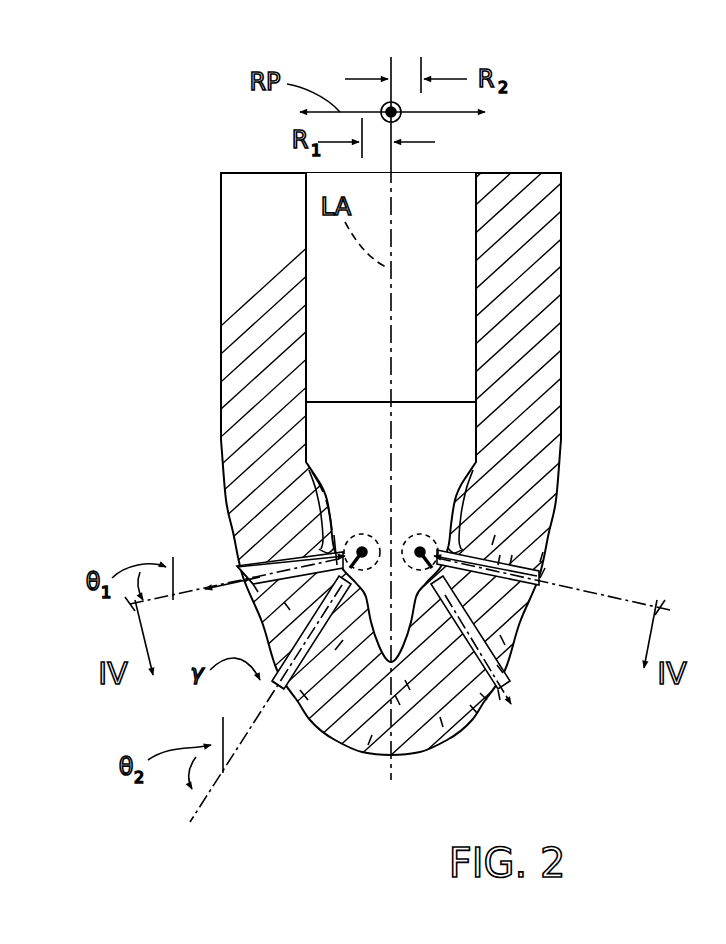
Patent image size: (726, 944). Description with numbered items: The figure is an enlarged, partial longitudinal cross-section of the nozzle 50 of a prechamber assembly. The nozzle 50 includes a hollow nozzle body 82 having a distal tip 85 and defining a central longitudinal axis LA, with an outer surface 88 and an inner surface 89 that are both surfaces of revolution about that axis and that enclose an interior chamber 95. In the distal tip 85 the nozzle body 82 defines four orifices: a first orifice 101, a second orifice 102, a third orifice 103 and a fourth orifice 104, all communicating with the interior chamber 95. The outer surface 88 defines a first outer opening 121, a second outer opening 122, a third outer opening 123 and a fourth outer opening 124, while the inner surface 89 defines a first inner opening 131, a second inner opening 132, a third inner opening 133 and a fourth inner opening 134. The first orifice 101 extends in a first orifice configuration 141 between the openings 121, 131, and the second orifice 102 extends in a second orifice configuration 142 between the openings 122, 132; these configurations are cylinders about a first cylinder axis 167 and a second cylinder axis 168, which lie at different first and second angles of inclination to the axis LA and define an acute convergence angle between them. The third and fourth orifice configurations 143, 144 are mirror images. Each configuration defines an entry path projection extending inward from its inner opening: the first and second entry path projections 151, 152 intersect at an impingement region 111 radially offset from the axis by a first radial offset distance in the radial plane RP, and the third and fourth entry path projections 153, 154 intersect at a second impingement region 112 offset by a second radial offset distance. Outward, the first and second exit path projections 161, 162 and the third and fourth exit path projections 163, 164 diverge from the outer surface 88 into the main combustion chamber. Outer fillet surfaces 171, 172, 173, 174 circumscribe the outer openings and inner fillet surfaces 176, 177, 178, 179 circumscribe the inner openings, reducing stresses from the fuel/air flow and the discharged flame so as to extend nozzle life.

The nozzle 50 is at (186, 141).
The nozzle body 82 is at (221, 215).
The outer surface 88 is at (218, 295).
The inner surface 89 is at (468, 407).
The interior chamber 95 is at (335, 436).
The distal tip 85 is at (290, 610).
The first orifice 101 is at (317, 553).
The second orifice 102 is at (312, 700).
The third orifice 103 is at (522, 550).
The fourth orifice 104 is at (497, 707).
The impingement region 111 is at (358, 545).
The second impingement region 112 is at (427, 548).
The first outer opening 121 is at (330, 570).
The second outer opening 122 is at (266, 707).
The third outer opening 123 is at (545, 568).
The fourth outer opening 124 is at (505, 676).
The first inner opening 131 is at (330, 547).
The second inner opening 132 is at (410, 690).
The third inner opening 133 is at (512, 555).
The fourth inner opening 134 is at (477, 713).
The first orifice configuration 141 is at (240, 567).
The second orifice configuration 142 is at (335, 650).
The third orifice configuration 143 is at (562, 600).
The fourth orifice configuration 144 is at (500, 635).
The first entry path projection 151 is at (343, 513).
The second entry path projection 152 is at (400, 705).
The third entry path projection 153 is at (495, 535).
The fourth entry path projection 154 is at (443, 727).
The first exit path projection 161 is at (226, 605).
The second exit path projection 162 is at (266, 697).
The third exit path projection 163 is at (558, 580).
The fourth exit path projection 164 is at (500, 700).
The first cylinder axis 167 is at (352, 553).
The second cylinder axis 168 is at (312, 700).
The first outer rounded fillet surface 171 is at (313, 567).
The second outer rounded fillet surface 172 is at (300, 690).
The third outer fillet surface 173 is at (543, 552).
The fourth outer fillet surface 174 is at (497, 665).
The first inner rounded fillet surface 176 is at (330, 523).
The second inner rounded fillet surface 177 is at (368, 745).
The third inner fillet surface 178 is at (500, 555).
The fourth inner fillet surface 179 is at (487, 700).